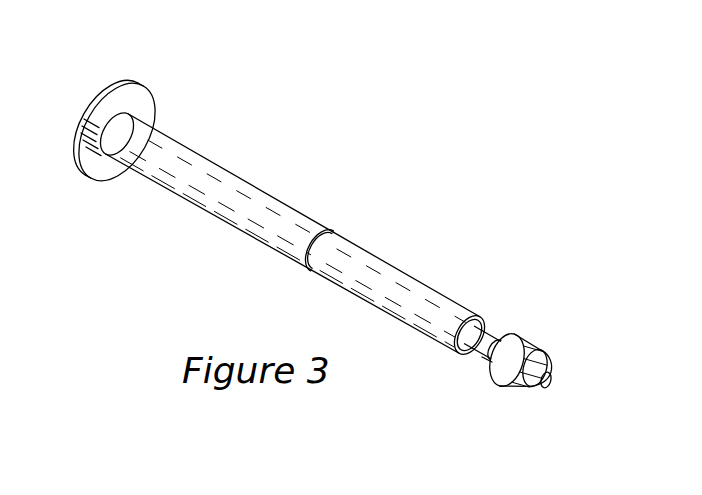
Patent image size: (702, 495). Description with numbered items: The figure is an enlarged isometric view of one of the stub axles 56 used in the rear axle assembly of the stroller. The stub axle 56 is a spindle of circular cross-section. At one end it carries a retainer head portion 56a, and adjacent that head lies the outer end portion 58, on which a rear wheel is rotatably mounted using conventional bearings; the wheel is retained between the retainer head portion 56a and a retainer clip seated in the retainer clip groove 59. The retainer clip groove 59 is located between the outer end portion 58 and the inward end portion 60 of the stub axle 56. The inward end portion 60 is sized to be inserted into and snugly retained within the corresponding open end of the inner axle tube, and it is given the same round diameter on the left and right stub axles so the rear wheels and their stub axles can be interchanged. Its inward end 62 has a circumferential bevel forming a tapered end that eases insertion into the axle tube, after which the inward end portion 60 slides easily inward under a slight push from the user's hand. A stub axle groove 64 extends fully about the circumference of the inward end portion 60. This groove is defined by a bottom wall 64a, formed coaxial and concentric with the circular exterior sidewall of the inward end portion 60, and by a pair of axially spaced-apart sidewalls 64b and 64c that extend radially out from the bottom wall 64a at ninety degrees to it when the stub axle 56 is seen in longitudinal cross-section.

The stub axle 56 is at (262, 192).
The retainer head portion 56a is at (132, 97).
The outer end portion 58 is at (182, 185).
The retainer clip groove 59 is at (330, 233).
The inward end portion 60 is at (405, 288).
The inward end 62 is at (507, 383).
The stub axle groove 64 is at (507, 327).
The bottom wall 64a is at (457, 357).
The sidewall 64b is at (493, 330).
The sidewall 64c is at (481, 357).